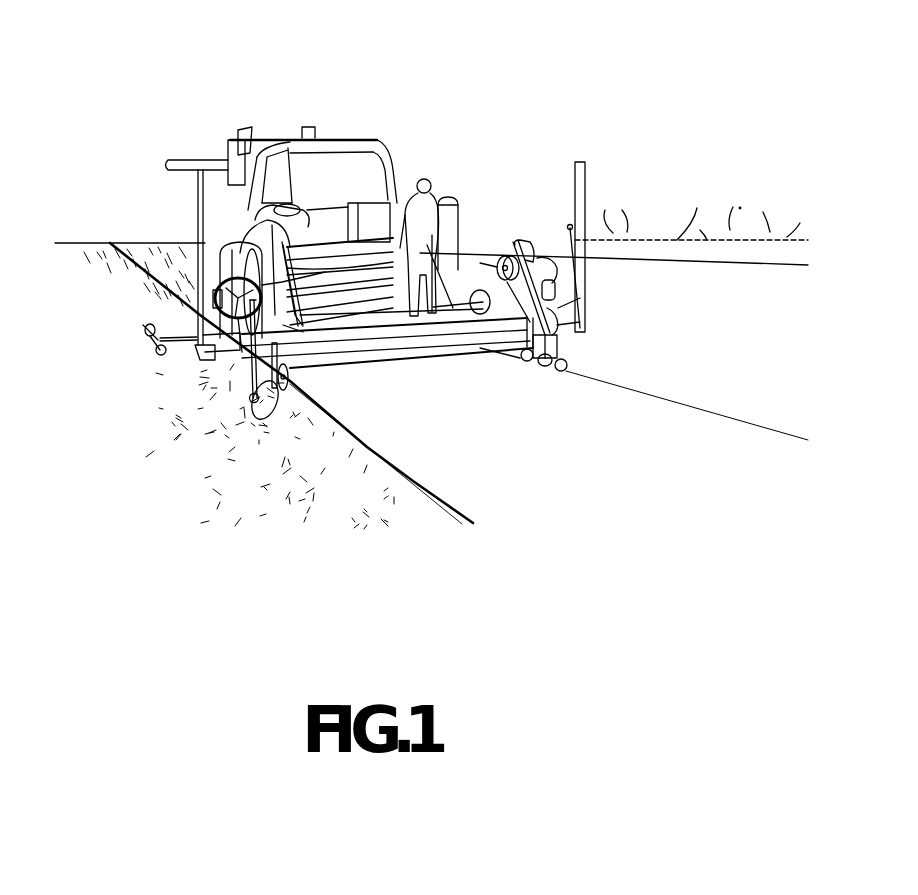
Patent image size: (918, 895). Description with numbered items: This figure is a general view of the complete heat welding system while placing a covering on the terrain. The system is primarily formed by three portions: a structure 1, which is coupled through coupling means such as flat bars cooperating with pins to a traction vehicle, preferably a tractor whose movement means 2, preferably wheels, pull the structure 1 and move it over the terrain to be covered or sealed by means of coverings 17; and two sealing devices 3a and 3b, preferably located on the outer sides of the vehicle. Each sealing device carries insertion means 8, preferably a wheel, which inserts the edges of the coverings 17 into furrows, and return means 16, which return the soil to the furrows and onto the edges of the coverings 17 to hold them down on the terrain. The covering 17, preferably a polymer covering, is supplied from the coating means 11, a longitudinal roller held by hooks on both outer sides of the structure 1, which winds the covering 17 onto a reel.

The structure 1 is at (237, 372).
The movement means 2 is at (272, 305).
The sealing device 3a is at (147, 362).
The sealing device 3b is at (557, 384).
The insertion means 8 is at (502, 238).
The coating means 11 is at (393, 370).
The return means 16 is at (527, 237).
The covering 17 is at (628, 423).